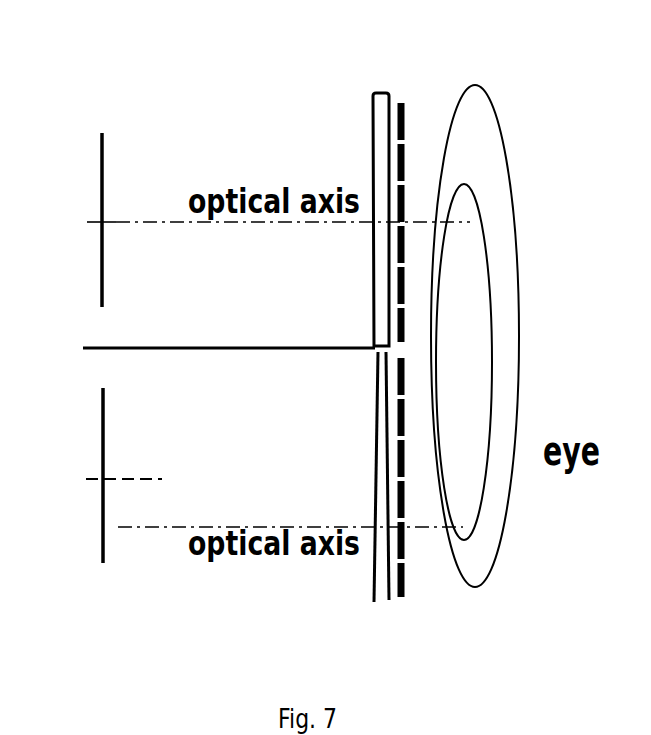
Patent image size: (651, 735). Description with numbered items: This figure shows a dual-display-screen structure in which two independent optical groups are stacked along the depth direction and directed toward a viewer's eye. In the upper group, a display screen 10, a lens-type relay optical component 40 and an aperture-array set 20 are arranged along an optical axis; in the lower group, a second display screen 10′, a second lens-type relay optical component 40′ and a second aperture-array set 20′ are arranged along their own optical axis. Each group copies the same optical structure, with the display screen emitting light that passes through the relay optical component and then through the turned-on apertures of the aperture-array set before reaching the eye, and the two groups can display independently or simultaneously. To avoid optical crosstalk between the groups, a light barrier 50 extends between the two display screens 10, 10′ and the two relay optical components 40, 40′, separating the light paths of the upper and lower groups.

The display screen 10 is at (97, 143).
The display screen 10′ is at (97, 430).
The light barrier 50 is at (97, 345).
The lens-type relay optical component 40 is at (370, 180).
The lens-type relay optical component 40′ is at (370, 583).
The aperture-array set 20 is at (403, 101).
The aperture-array set 20′ is at (406, 590).